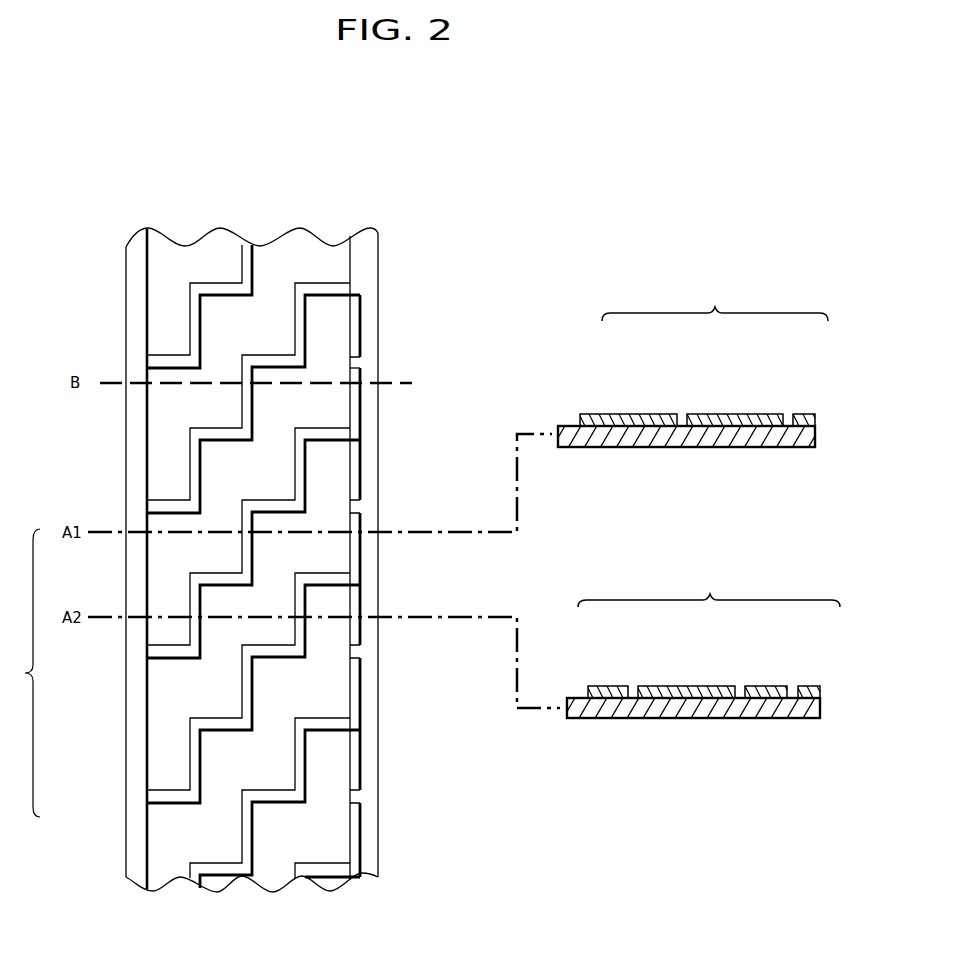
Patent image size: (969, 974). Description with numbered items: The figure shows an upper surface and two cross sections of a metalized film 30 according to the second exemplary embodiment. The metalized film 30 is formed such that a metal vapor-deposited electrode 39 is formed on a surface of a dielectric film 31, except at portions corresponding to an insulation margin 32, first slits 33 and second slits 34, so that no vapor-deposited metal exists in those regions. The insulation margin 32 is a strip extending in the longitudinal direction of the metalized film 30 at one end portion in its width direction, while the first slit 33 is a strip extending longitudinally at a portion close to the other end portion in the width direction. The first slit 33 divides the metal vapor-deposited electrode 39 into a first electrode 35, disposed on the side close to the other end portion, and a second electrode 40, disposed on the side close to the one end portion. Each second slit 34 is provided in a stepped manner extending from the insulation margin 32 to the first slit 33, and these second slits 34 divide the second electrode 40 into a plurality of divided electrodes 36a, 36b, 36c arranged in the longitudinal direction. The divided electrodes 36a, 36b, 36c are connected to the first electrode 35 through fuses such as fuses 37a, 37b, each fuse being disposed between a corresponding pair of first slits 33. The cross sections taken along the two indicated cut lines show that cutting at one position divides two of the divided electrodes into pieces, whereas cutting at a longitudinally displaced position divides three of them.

The metalized film 30 is at (147, 212).
The dielectric film 31 is at (598, 438).
The insulation margin 32 is at (138, 258).
The first slit 33 is at (352, 312).
The second slit 34 is at (248, 397).
The first electrode 35 is at (371, 257).
The divided electrode 36a is at (190, 543).
The divided electrode 36b is at (167, 753).
The divided electrode 36c is at (225, 748).
The fuse 37a is at (354, 365).
The fuse 37b is at (360, 507).
The metal vapor-deposited electrode 39 is at (709, 447).
The second electrode 40 is at (22, 673).